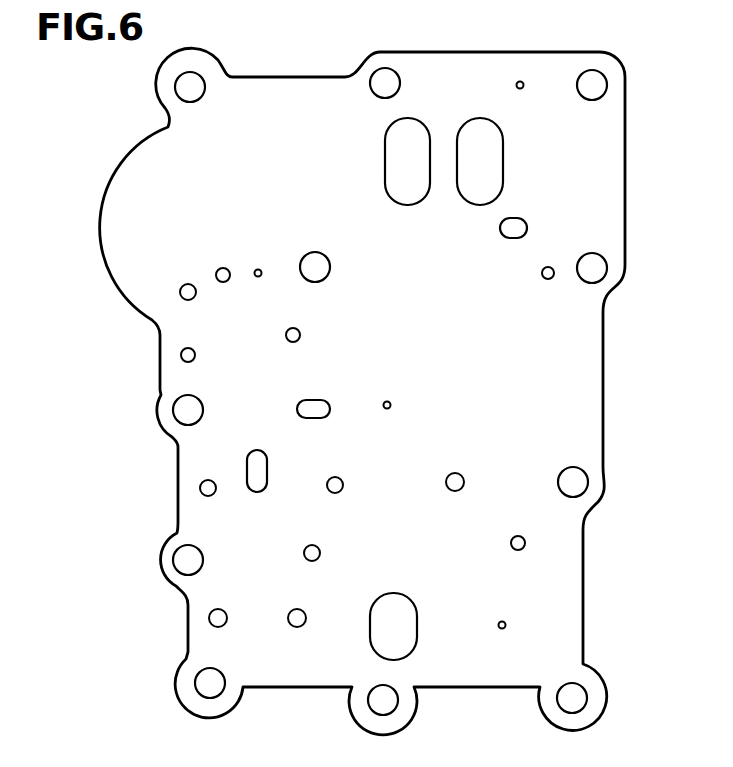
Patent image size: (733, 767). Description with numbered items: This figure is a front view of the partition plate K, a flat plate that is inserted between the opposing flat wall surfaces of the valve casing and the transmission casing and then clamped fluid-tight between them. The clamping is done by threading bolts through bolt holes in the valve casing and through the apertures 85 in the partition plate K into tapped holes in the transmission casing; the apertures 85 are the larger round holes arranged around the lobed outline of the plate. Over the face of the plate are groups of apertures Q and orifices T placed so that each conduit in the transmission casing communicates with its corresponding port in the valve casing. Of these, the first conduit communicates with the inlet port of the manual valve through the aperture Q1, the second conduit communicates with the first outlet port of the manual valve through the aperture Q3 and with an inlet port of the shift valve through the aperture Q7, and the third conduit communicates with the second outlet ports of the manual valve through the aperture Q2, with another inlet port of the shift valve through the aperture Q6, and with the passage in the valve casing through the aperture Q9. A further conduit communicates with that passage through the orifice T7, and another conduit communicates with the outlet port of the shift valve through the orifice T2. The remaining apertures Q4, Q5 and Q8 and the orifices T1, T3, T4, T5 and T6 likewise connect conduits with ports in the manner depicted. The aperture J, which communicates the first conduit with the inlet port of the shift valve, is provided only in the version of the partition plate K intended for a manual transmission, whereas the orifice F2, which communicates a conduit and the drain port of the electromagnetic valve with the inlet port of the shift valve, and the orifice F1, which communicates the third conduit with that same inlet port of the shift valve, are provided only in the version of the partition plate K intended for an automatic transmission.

The partition plate K is at (299, 83).
The apertures 85 is at (386, 76).
The apertures Q is at (513, 222).
The aperture Q1 is at (400, 609).
The aperture Q2 is at (303, 625).
The aperture Q3 is at (222, 610).
The aperture Q4 is at (415, 128).
The aperture Q5 is at (475, 125).
The aperture Q6 is at (340, 478).
The aperture Q7 is at (262, 470).
The aperture Q8 is at (520, 536).
The aperture Q9 is at (319, 406).
The orifice T1 is at (508, 622).
The orifice T2 is at (394, 402).
The orifice T3 is at (541, 273).
The orifice T4 is at (521, 90).
The orifice T5 is at (300, 337).
The orifice T6 is at (223, 267).
The orifice T7 is at (259, 269).
The orifice F1 is at (320, 548).
The orifice F2 is at (212, 480).
The aperture J is at (460, 478).